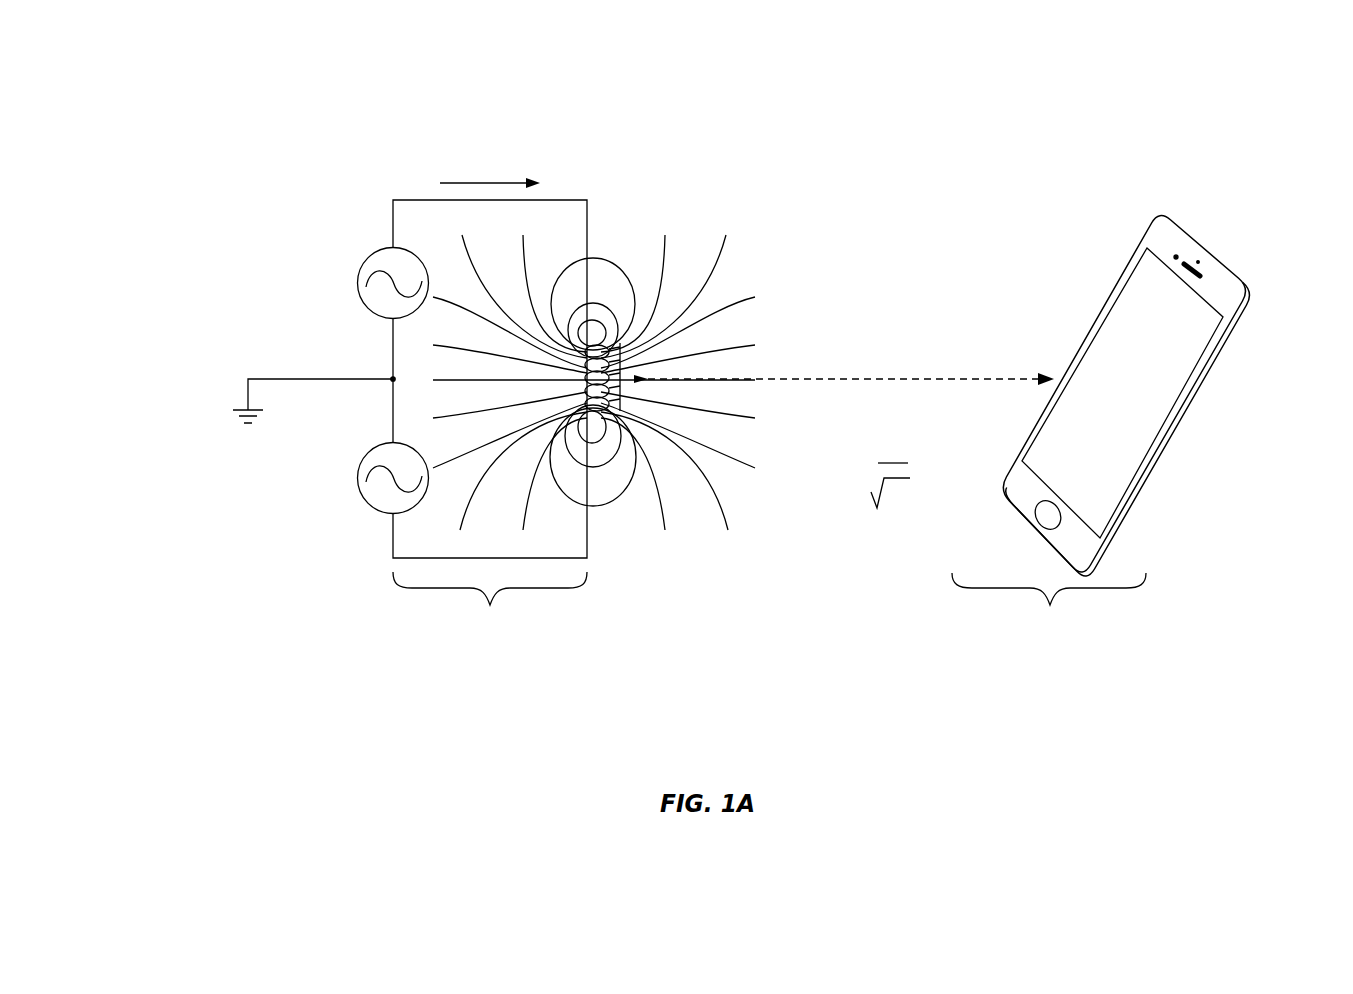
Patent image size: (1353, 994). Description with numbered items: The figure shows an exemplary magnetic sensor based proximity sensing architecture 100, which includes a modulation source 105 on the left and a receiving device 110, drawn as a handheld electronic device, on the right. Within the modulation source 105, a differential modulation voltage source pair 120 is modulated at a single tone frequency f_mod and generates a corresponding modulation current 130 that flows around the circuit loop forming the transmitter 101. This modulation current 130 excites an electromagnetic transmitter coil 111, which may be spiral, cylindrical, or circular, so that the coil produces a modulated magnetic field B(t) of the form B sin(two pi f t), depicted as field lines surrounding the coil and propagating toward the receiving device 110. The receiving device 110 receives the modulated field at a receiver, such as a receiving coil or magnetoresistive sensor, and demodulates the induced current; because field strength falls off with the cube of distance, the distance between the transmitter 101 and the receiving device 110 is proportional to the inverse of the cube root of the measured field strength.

The magnetic sensor based proximity sensing architecture 100 is at (267, 124).
The transmitter 101 is at (587, 112).
The modulation source 105 is at (470, 650).
The receiving device 110 is at (1047, 650).
The electromagnetic transmitter coil 111 is at (623, 335).
The differential modulation voltage source pair 120 is at (287, 275).
The modulation current 130 is at (528, 158).